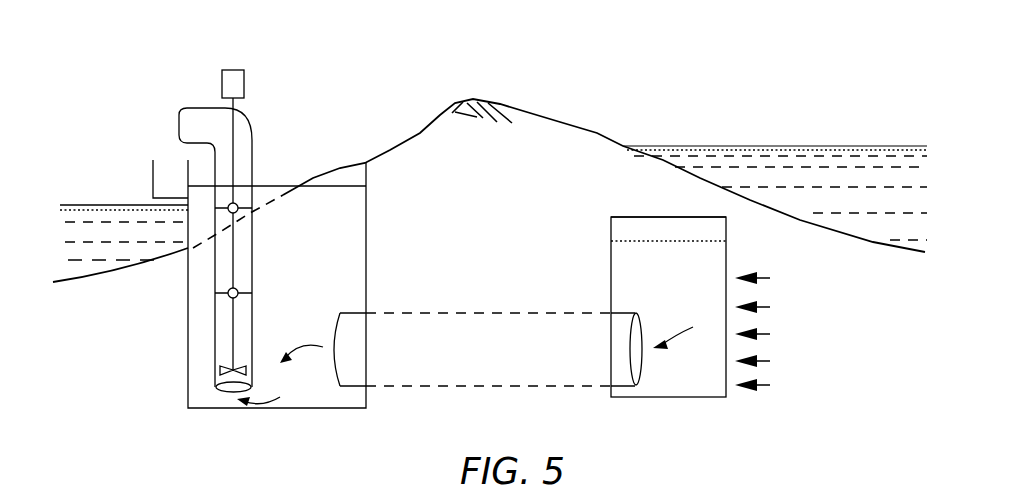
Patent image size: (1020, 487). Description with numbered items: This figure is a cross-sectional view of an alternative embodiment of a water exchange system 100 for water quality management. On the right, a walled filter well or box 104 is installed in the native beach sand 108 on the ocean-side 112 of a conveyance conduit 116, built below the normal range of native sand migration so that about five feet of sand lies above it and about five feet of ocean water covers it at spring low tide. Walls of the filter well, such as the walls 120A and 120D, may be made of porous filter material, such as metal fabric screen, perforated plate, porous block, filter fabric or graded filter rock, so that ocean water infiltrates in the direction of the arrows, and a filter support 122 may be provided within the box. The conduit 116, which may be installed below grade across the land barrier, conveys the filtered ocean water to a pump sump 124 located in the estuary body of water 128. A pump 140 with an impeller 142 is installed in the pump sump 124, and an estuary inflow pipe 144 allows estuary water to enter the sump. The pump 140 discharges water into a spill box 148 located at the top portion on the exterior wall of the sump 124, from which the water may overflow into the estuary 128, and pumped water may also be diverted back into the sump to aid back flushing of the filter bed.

The water exchange system 100 is at (664, 86).
The filter well or box 104 is at (685, 292).
The native beach sand 108 is at (765, 196).
The ocean-side 112 is at (867, 174).
The conveyance conduit 116 is at (502, 361).
The wall of the filter well or box 120A is at (727, 252).
The wall of the filter well or box 120D is at (682, 217).
The filter support 122 is at (630, 233).
The pump sump 124 is at (303, 247).
The estuary body of water 128 is at (85, 237).
The pump 140 is at (245, 92).
The impeller 142 is at (233, 322).
The estuary inflow pipe 144 is at (252, 140).
The spill box 148 is at (153, 175).